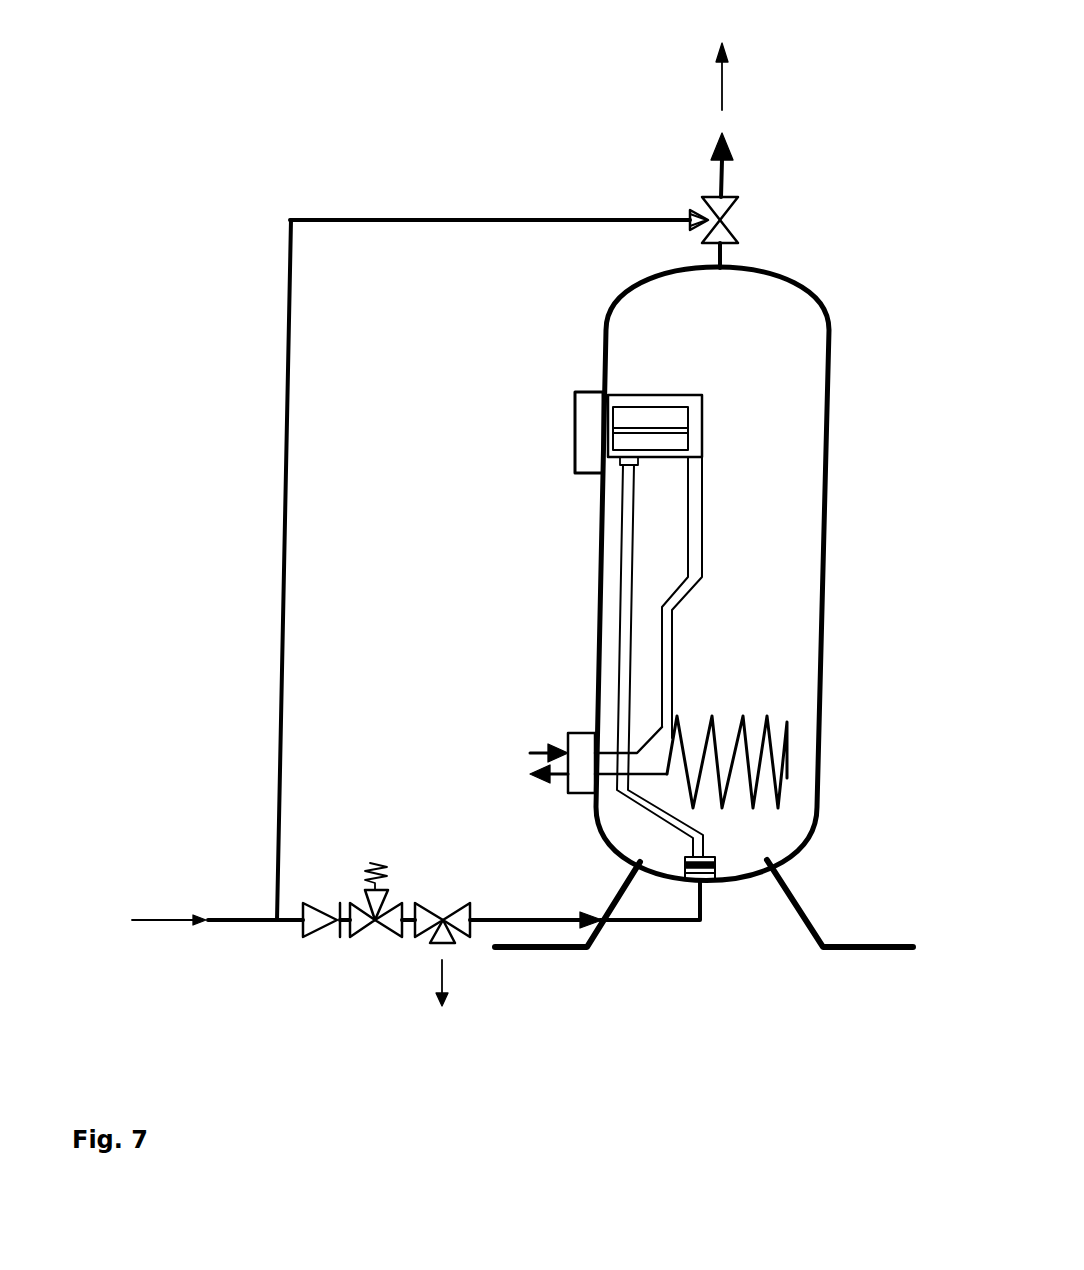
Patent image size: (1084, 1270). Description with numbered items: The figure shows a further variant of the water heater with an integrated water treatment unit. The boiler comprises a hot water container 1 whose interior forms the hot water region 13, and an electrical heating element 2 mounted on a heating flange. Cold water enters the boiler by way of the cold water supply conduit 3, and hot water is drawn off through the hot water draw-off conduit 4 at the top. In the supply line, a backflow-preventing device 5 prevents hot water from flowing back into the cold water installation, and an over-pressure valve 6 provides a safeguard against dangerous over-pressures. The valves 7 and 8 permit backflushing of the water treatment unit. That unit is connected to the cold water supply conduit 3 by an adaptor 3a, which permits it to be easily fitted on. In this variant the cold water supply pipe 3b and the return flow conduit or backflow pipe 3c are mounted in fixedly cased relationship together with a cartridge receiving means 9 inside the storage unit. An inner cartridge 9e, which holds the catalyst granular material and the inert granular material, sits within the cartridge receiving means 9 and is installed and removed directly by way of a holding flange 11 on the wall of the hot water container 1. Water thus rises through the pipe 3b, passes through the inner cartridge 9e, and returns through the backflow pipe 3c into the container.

The hot water container 1 is at (825, 590).
The electrical heating element 2 is at (563, 733).
The cold water supply conduit 3 is at (399, 575).
The adaptor 3a is at (713, 880).
The pipe 3b is at (627, 557).
The backflow pipe 3c is at (693, 545).
The hot water draw-off conduit 4 is at (720, 55).
The backflow-preventing device 5 is at (318, 942).
The over-pressure valve 6 is at (357, 883).
The valve 7 is at (452, 898).
The valve 8 is at (738, 222).
The cartridge receiving means 9 is at (635, 403).
The inner cartridge 9e is at (672, 422).
The holding flange 11 is at (565, 420).
The hot water region 13 is at (758, 440).